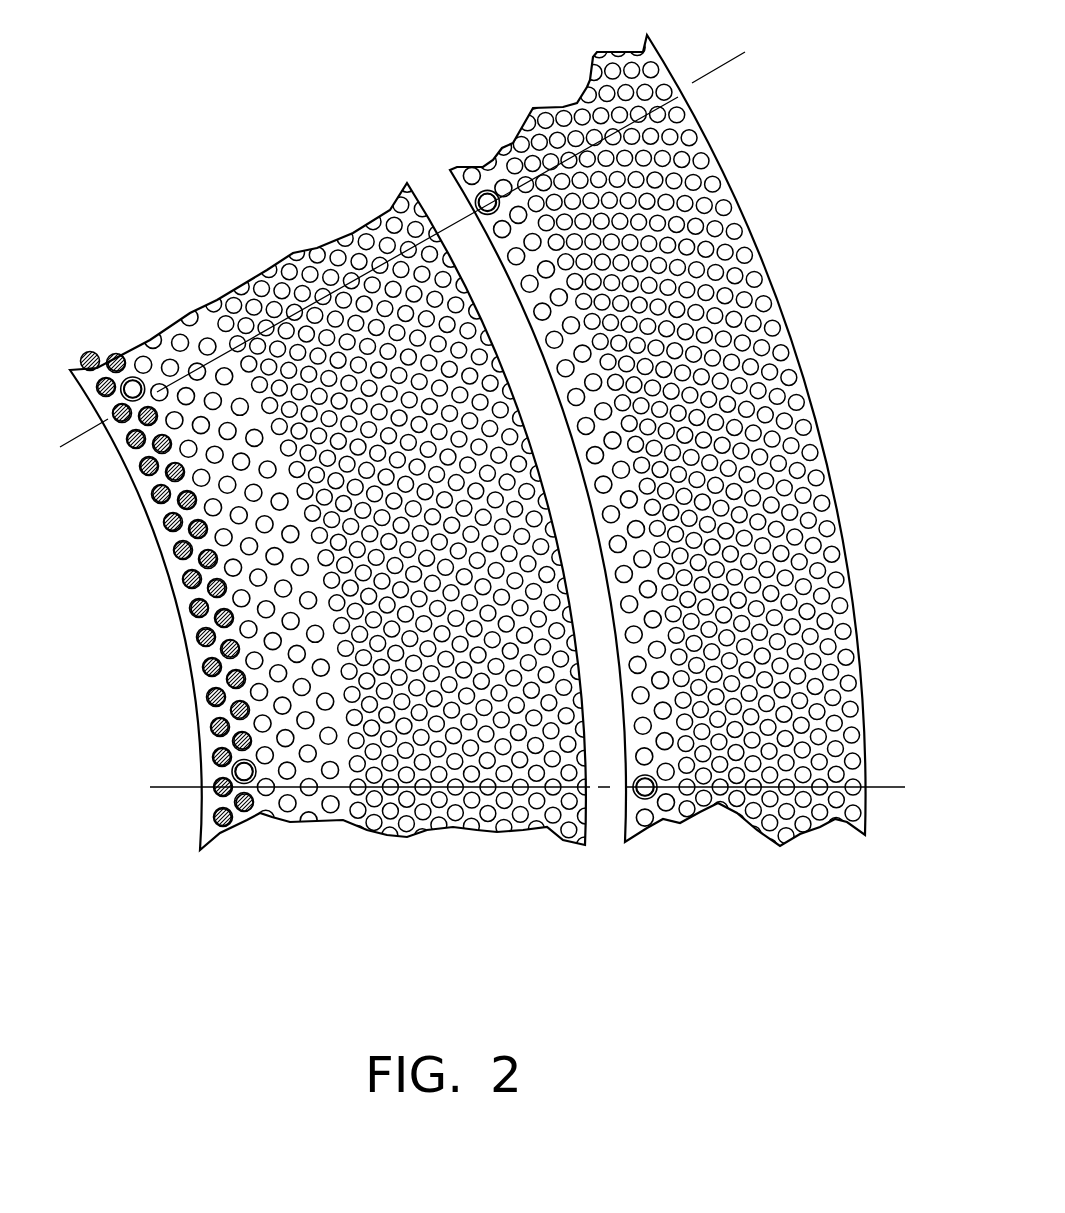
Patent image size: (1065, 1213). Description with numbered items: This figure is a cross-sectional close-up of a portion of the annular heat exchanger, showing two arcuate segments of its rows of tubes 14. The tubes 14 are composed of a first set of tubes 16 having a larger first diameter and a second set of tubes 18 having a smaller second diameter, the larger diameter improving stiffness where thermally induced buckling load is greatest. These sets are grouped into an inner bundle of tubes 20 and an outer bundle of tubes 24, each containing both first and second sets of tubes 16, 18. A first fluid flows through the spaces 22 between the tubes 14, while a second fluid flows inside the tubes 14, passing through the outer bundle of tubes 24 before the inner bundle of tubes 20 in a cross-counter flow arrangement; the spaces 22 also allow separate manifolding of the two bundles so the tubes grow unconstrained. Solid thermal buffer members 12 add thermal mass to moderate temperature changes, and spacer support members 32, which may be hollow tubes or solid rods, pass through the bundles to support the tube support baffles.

The thermal buffer member 12 is at (182, 568).
The tubes 14 is at (480, 515).
The first set of tubes 16 is at (252, 850).
The second set of tubes 18 is at (314, 850).
The inner bundle of tubes 20 is at (255, 896).
The spaces 22 is at (650, 476).
The outer bundle of tubes 24 is at (625, 896).
The spacer support member 32 is at (131, 377).